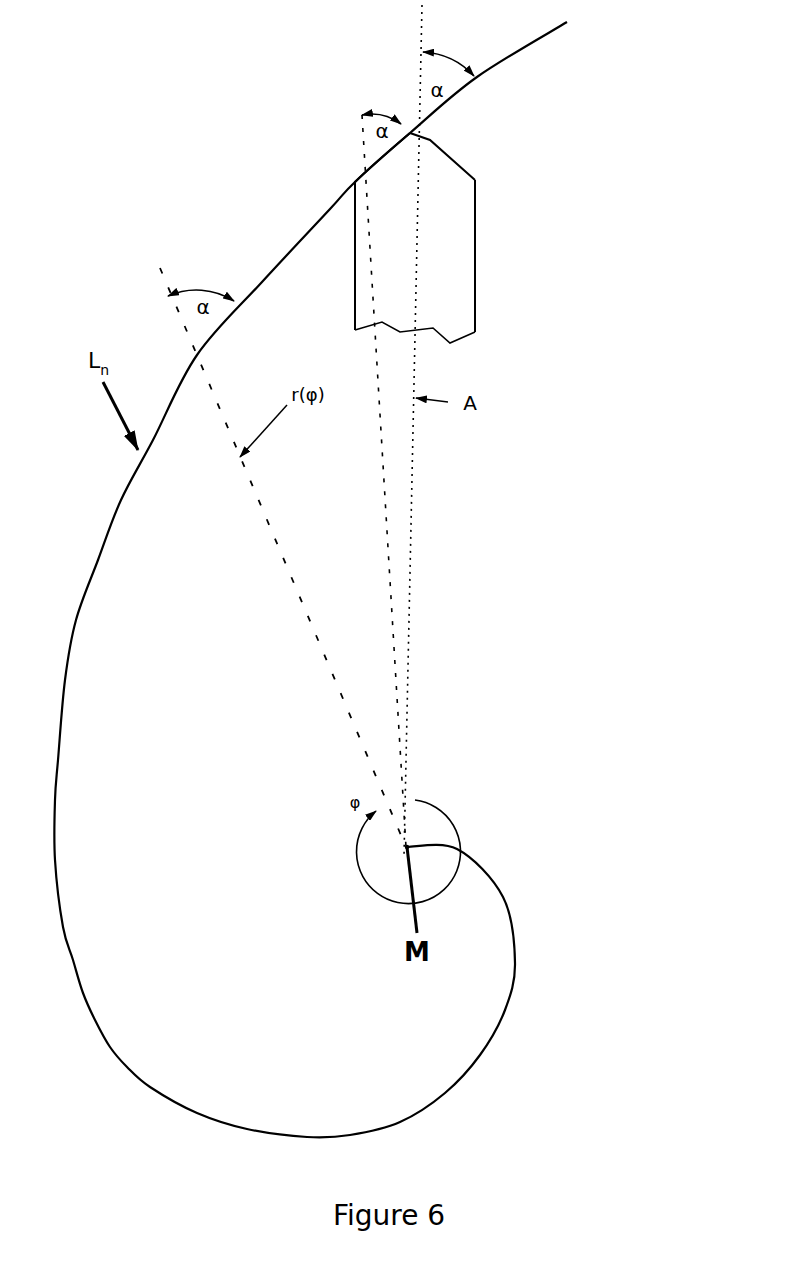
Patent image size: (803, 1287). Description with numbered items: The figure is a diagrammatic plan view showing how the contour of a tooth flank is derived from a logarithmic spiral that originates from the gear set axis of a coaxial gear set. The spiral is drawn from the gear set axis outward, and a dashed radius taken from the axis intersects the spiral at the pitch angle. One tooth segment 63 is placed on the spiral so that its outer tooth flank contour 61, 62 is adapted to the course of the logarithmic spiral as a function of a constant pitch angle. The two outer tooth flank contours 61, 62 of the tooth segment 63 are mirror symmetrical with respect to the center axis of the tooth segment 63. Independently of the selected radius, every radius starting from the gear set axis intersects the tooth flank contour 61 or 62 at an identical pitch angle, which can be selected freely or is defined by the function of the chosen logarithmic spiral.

The outer tooth flank contour 61 is at (373, 162).
The outer tooth flank contour 62 is at (447, 147).
The tooth segment 63 is at (480, 240).